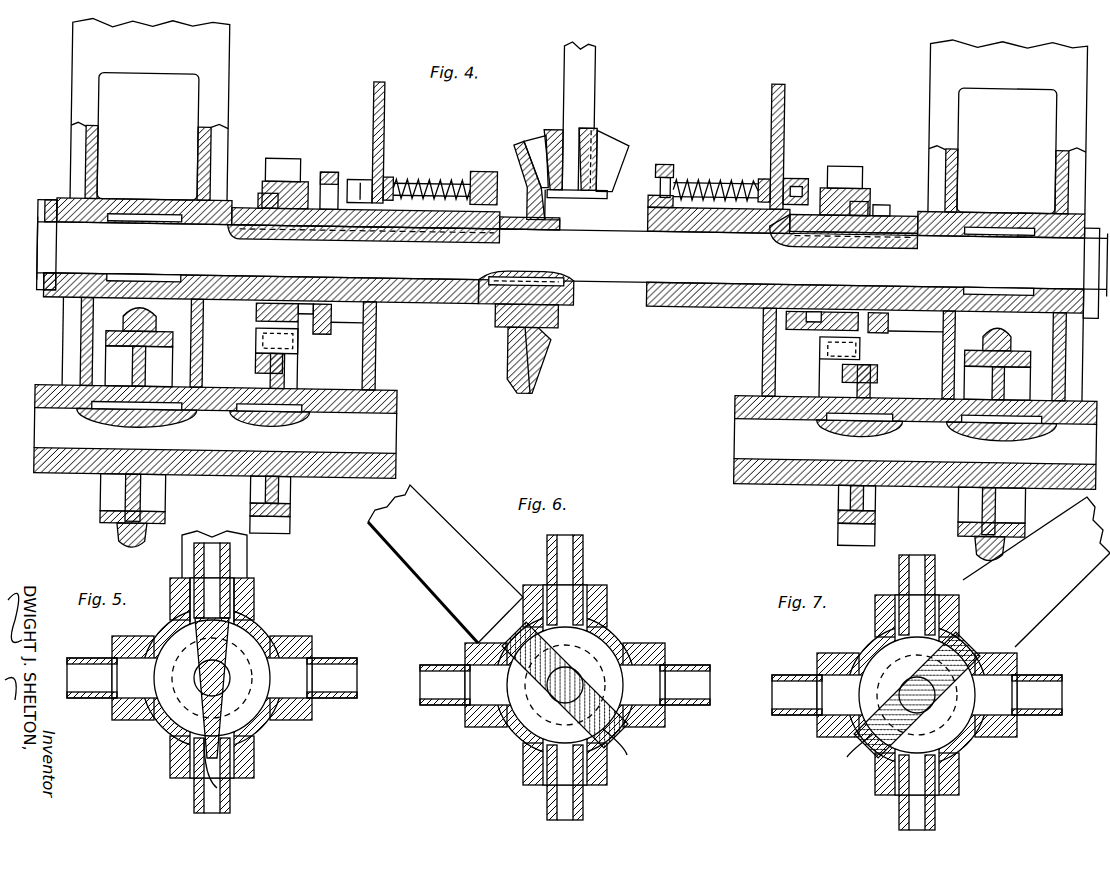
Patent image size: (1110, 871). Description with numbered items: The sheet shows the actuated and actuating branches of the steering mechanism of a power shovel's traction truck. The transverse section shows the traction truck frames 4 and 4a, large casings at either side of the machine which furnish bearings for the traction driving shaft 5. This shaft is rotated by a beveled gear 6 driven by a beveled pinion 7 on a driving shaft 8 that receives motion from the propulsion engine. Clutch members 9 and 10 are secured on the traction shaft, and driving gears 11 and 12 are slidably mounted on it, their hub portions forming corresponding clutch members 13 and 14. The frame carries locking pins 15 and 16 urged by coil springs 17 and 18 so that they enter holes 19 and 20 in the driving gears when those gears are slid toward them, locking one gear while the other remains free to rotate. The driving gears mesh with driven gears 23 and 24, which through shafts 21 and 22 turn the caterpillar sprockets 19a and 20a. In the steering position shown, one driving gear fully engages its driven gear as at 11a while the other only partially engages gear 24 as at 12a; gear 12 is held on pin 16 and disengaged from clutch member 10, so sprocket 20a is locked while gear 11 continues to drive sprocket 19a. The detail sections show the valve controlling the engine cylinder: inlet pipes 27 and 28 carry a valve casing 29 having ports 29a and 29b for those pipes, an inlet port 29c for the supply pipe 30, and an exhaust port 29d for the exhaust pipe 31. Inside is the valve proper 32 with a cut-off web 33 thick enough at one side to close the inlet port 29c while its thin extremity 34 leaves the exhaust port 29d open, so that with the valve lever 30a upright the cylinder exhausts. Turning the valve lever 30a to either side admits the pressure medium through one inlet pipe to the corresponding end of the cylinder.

In FIG. 4, the traction truck frame 4 is at (72, 152).
In FIG. 4, the traction truck frame 4a is at (383, 113).
In FIG. 4, the traction driving shaft 5 is at (608, 226).
In FIG. 4, the beveled gear 6 is at (518, 136).
In FIG. 4, the beveled pinion 7 is at (549, 120).
In FIG. 4, the driving shaft 8 is at (570, 70).
In FIG. 4, the clutch member 9 is at (245, 205).
In FIG. 4, the clutch member 10 is at (898, 205).
In FIG. 4, the driving gear 11 is at (300, 156).
In FIG. 4, the fully engaged driving gear position 11a is at (296, 335).
In FIG. 4, the driving gear 12 is at (845, 154).
In FIG. 4, the partially engaged driving gear position 12a is at (862, 337).
In FIG. 4, the clutch member 13 is at (263, 190).
In FIG. 4, the clutch member 14 is at (866, 188).
In FIG. 4, the locking pin 15 is at (356, 175).
In FIG. 4, the locking pin 16 is at (792, 170).
In FIG. 4, the coil spring 17 is at (426, 172).
In FIG. 4, the coil spring 18 is at (718, 170).
In FIG. 4, the hole 19 is at (325, 168).
In FIG. 4, the caterpillar sprocket 19a is at (128, 539).
In FIG. 4, the hole 20 is at (790, 206).
In FIG. 4, the caterpillar sprocket 20a is at (1000, 530).
In FIG. 4, the shaft 21 is at (380, 425).
In FIG. 4, the shaft 22 is at (745, 424).
In FIG. 4, the driven gear 23 is at (290, 520).
In FIG. 4, the driven gear 24 is at (843, 516).
In FIG. 5, the inlet pipe 27 is at (92, 666).
In FIG. 6, the inlet pipe 27 is at (445, 671).
In FIG. 7, the inlet pipe 27 is at (797, 680).
In FIG. 5, the inlet pipe 28 is at (336, 668).
In FIG. 6, the inlet pipe 28 is at (685, 676).
In FIG. 7, the inlet pipe 28 is at (1054, 695).
In FIG. 5, the valve casing 29 is at (187, 678).
In FIG. 6, the valve casing 29 is at (550, 673).
In FIG. 7, the valve casing 29 is at (892, 693).
In FIG. 5, the port 29a is at (135, 693).
In FIG. 6, the port 29a is at (488, 702).
In FIG. 7, the port 29a is at (840, 708).
In FIG. 5, the port 29b is at (289, 666).
In FIG. 6, the port 29b is at (642, 674).
In FIG. 7, the port 29b is at (1018, 692).
In FIG. 5, the inlet port 29c is at (235, 601).
In FIG. 6, the inlet port 29c is at (584, 608).
In FIG. 7, the inlet port 29c is at (899, 618).
In FIG. 5, the exhaust port 29d is at (231, 755).
In FIG. 6, the exhaust port 29d is at (583, 762).
In FIG. 7, the exhaust port 29d is at (917, 772).
In FIG. 5, the supply pipe 30 is at (239, 580).
In FIG. 6, the supply pipe 30 is at (535, 572).
In FIG. 7, the supply pipe 30 is at (901, 595).
In FIG. 5, the valve lever 30a is at (249, 554).
In FIG. 6, the valve lever 30a is at (445, 564).
In FIG. 7, the valve lever 30a is at (1036, 572).
In FIG. 5, the exhaust pipe 31 is at (187, 775).
In FIG. 6, the exhaust pipe 31 is at (542, 782).
In FIG. 7, the exhaust pipe 31 is at (898, 792).
In FIG. 5, the valve proper 32 is at (194, 697).
In FIG. 6, the valve proper 32 is at (549, 704).
In FIG. 7, the valve proper 32 is at (910, 710).
In FIG. 5, the cut-off web 33 is at (185, 668).
In FIG. 6, the cut-off web 33 is at (565, 653).
In FIG. 7, the cut-off web 33 is at (926, 685).
In FIG. 5, the thin extremity of web 34 is at (239, 771).
In FIG. 6, the thin extremity of web 34 is at (642, 742).
In FIG. 7, the thin extremity of web 34 is at (837, 766).